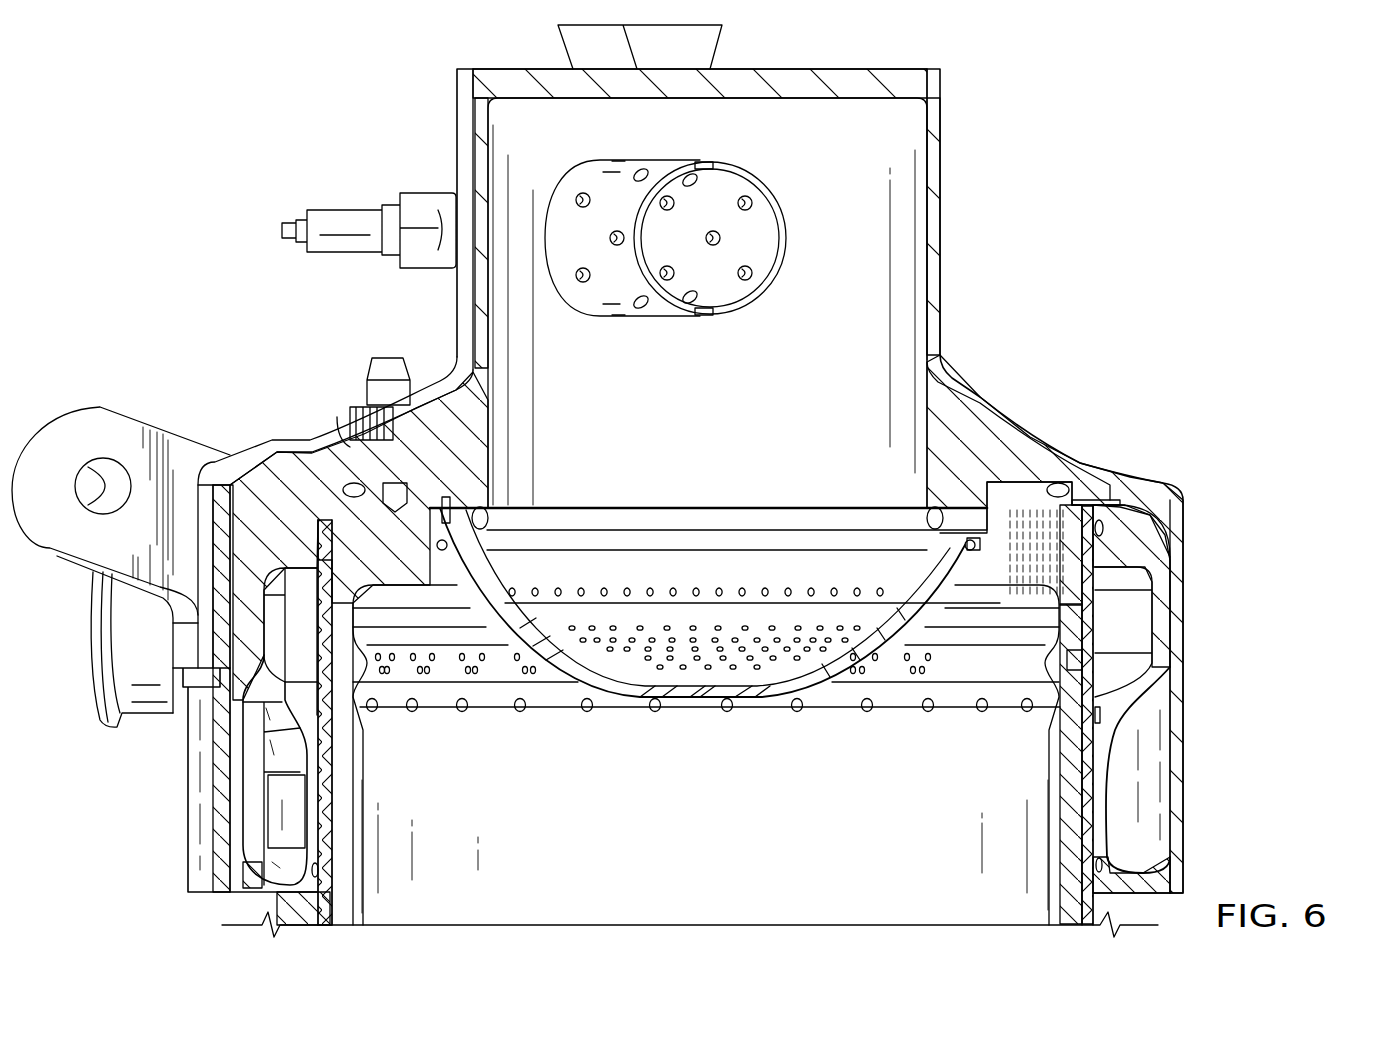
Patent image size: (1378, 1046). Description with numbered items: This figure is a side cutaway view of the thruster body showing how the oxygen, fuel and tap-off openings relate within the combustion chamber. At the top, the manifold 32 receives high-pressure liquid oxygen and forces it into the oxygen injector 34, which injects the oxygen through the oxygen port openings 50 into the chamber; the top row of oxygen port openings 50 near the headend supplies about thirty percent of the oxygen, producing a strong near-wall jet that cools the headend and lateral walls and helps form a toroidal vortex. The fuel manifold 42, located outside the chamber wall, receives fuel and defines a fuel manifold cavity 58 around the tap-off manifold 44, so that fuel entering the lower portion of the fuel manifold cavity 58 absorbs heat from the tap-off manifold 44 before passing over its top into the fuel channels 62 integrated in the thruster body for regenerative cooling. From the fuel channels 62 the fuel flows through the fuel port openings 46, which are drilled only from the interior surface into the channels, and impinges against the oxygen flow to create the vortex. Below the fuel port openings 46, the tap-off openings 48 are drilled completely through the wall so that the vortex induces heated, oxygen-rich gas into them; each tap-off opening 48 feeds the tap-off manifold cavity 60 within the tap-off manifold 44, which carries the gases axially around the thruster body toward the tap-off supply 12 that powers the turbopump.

The tap-off supply 12 is at (155, 715).
The manifold 32 is at (943, 142).
The oxygen injector 34 is at (565, 575).
The fuel manifold 42 is at (273, 530).
The tap-off manifold 44 is at (1157, 642).
The fuel port openings 46 is at (424, 680).
The tap-off openings 48 is at (353, 708).
The oxygen port openings 50 is at (640, 590).
The fuel manifold cavity 58 is at (250, 820).
The tap-off manifold cavity 60 is at (1138, 605).
The fuel channels 62 is at (1005, 530).